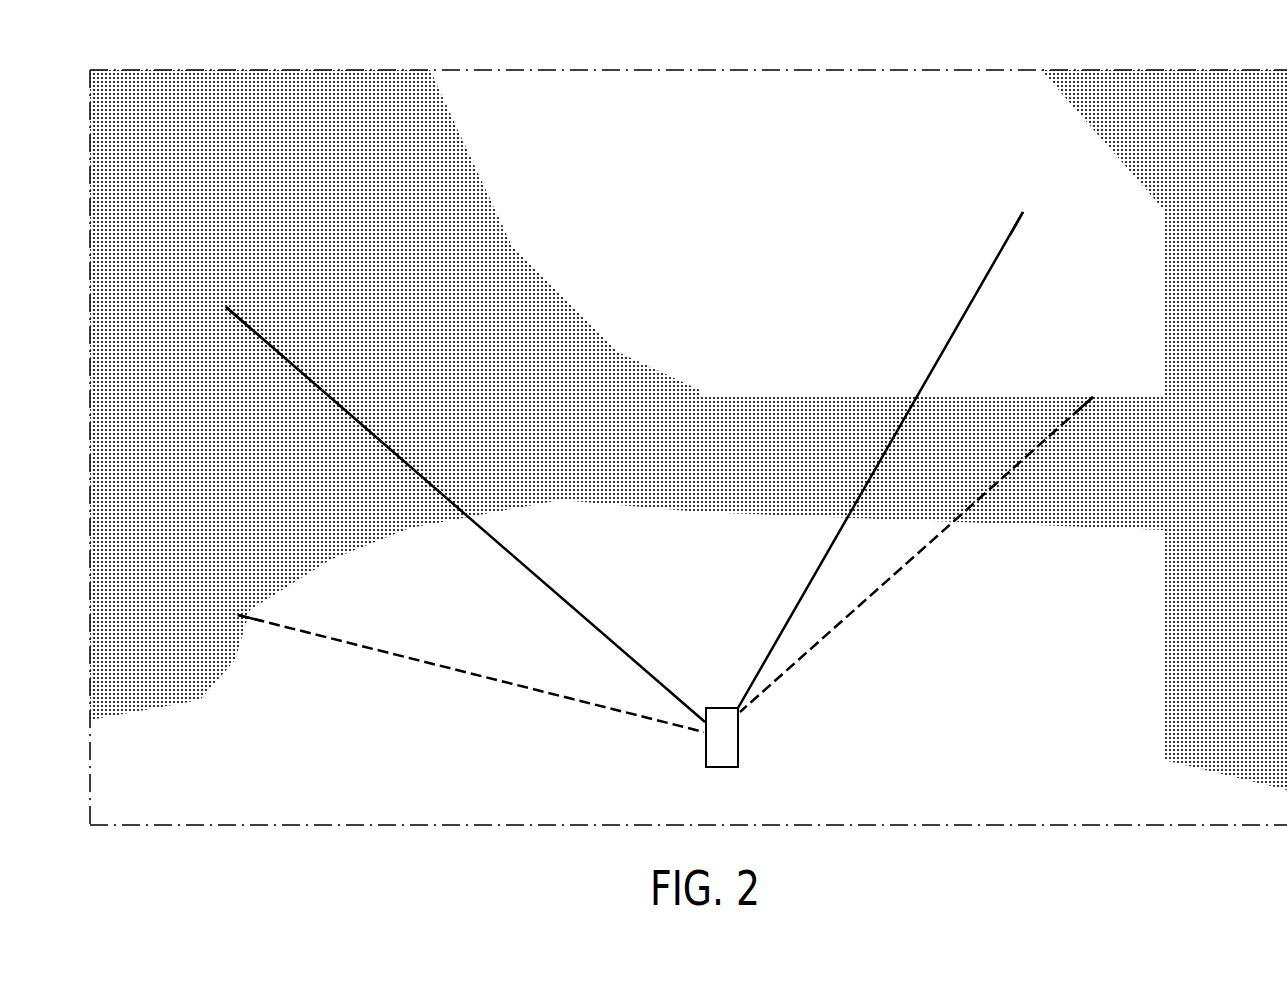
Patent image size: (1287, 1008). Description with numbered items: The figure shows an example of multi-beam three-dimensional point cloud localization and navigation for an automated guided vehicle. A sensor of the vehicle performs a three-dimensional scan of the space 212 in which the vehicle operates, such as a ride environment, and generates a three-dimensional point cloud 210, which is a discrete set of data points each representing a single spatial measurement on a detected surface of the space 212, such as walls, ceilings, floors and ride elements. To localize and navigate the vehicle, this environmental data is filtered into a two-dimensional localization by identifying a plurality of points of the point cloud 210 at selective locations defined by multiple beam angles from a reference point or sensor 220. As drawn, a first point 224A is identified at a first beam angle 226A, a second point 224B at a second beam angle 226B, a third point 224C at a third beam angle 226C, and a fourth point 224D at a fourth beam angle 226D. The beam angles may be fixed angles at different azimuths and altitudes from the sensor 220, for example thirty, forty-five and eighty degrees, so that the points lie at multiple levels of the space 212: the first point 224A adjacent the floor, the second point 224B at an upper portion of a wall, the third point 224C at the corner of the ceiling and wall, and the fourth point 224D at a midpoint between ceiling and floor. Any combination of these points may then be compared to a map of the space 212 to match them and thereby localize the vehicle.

The 3D point cloud 210 is at (1186, 48).
The space 212 is at (356, 122).
The sensor 220 is at (738, 742).
The first point 224A is at (238, 615).
The second point 224B is at (226, 307).
The third point 224C is at (1023, 212).
The fourth point 224D is at (1093, 397).
The first beam angle 226A is at (470, 674).
The second beam angle 226B is at (566, 601).
The third beam angle 226C is at (916, 398).
The fourth beam angle 226D is at (950, 525).